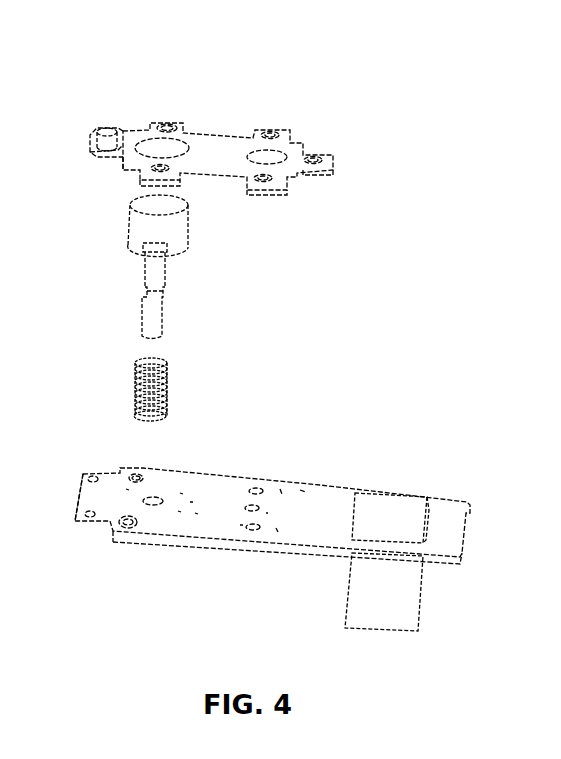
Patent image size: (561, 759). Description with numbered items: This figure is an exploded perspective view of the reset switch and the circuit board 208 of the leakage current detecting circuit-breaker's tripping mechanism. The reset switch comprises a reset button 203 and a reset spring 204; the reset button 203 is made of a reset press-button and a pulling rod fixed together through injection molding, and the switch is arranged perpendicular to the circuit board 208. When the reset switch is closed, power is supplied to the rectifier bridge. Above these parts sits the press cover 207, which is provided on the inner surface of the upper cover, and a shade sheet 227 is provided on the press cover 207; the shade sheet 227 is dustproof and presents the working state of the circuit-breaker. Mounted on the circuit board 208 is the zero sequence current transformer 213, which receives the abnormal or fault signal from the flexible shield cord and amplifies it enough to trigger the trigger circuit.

The reset button 203 is at (162, 308).
The reset spring 204 is at (170, 387).
The press cover 207 is at (207, 170).
The circuit board 208 is at (177, 480).
The zero sequence current transformer 213 is at (392, 510).
The shade sheet 227 is at (108, 132).